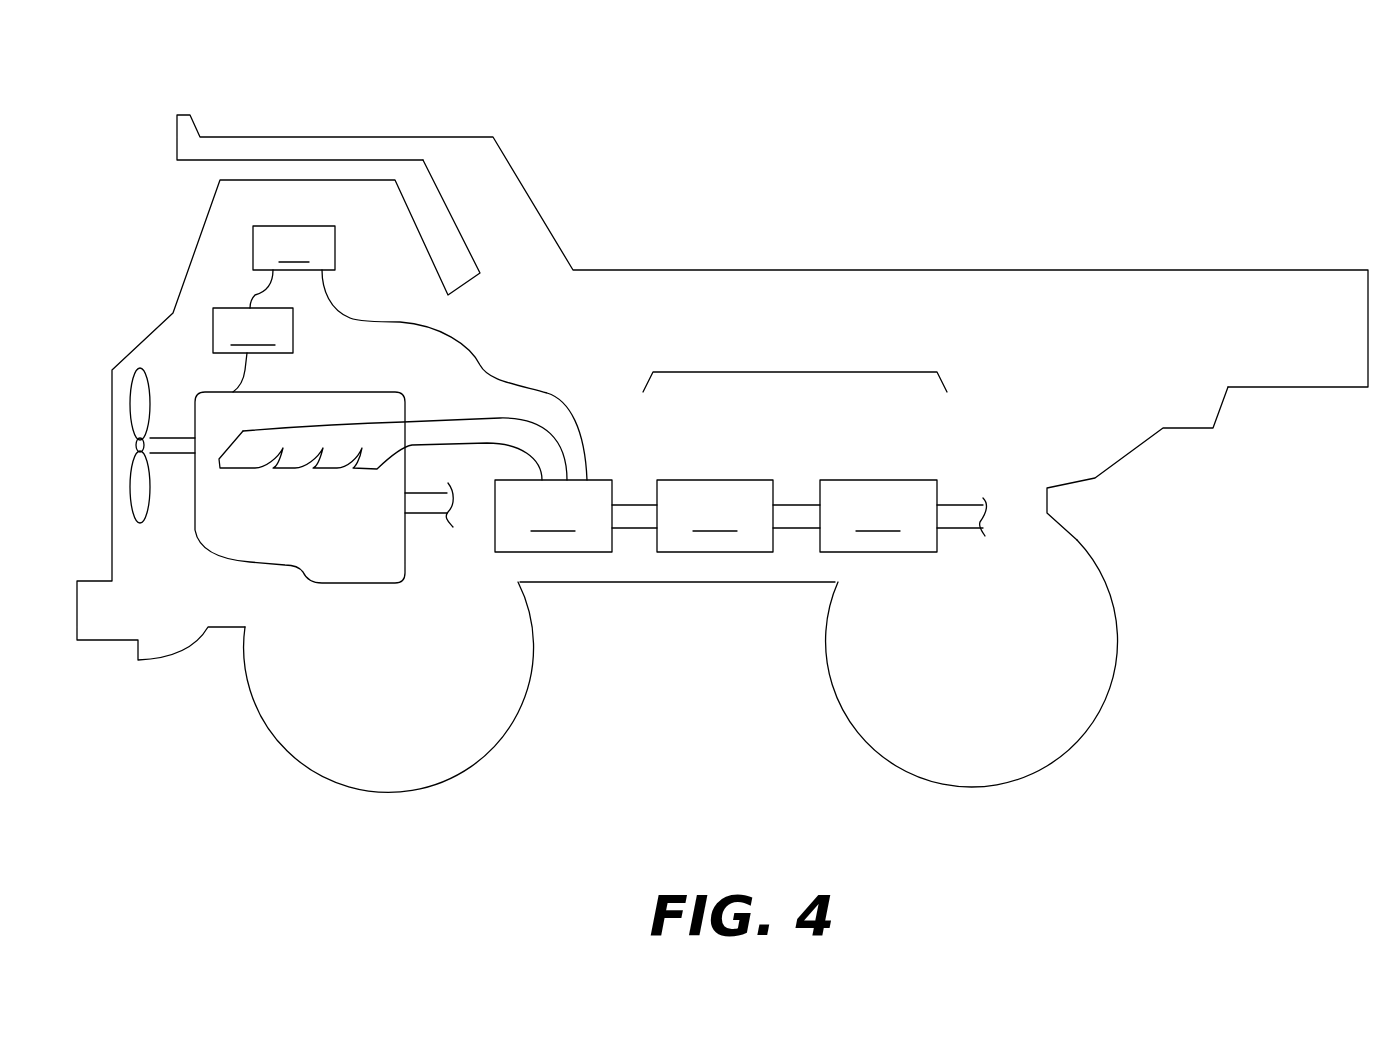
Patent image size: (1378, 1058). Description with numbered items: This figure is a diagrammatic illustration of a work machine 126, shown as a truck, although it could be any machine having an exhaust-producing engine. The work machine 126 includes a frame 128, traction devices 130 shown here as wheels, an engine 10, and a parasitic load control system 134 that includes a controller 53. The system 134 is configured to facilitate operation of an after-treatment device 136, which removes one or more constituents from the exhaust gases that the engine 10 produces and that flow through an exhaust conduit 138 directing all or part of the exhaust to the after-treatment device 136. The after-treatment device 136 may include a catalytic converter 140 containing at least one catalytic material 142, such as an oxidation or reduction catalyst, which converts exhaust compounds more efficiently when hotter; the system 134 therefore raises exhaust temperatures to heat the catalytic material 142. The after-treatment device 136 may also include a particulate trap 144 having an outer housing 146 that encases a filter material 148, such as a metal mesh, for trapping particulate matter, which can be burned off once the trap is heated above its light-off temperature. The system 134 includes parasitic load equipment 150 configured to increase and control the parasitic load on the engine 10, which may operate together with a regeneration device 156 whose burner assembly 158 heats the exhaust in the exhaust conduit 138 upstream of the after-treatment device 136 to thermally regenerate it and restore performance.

The engine 10 is at (342, 603).
The controller 53 is at (420, 353).
The work machine 126 is at (715, 133).
The frame 128 is at (677, 582).
The traction devices 130 is at (467, 743).
The parasitic load control system 134 is at (583, 300).
The after-treatment device 136 is at (810, 372).
The exhaust conduit 138 is at (463, 418).
The catalytic converter 140 is at (707, 445).
The catalytic material 142 is at (715, 516).
The particulate trap 144 is at (855, 443).
The outer housing 146 is at (913, 480).
The filter material 148 is at (878, 516).
The parasitic load equipment 150 is at (253, 331).
The regeneration device 156 is at (483, 580).
The burner assembly 158 is at (553, 516).